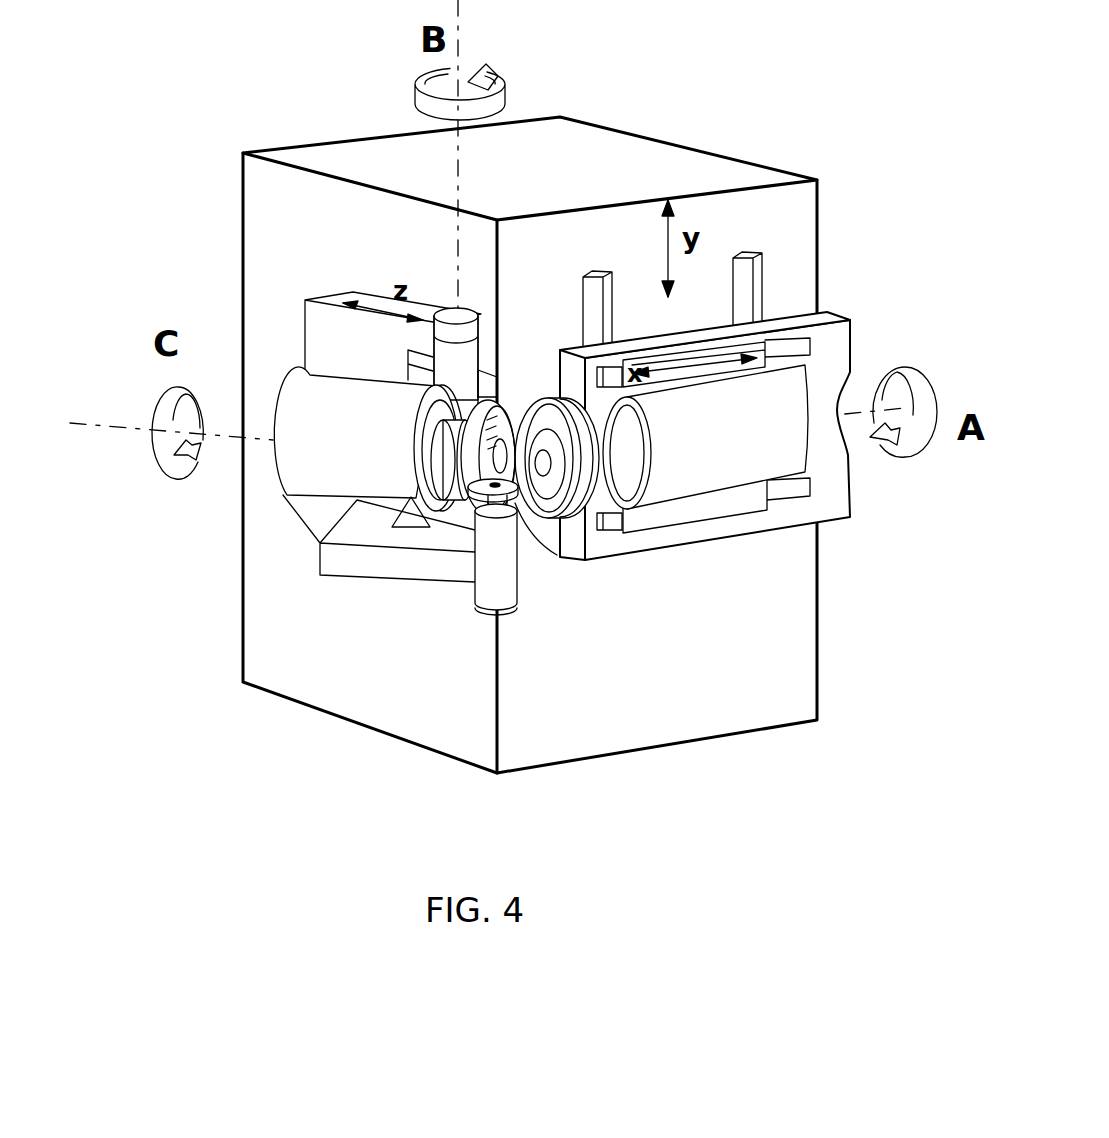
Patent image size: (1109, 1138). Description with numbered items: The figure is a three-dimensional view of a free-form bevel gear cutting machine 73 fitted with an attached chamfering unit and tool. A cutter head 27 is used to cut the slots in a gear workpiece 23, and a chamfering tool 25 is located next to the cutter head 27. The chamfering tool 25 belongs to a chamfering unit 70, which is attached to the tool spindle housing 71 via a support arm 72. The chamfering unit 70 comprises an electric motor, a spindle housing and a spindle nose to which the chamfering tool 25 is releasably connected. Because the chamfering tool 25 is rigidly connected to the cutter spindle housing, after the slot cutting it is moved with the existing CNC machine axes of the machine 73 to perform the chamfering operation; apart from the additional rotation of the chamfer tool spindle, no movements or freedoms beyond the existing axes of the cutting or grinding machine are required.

The gear workpiece 23 is at (547, 503).
The chamfering tool 25 is at (513, 507).
The cutter head 27 is at (483, 403).
The chamfering unit 70 is at (487, 588).
The tool spindle housing 71 is at (307, 462).
The support arm 72 is at (363, 565).
The free-form bevel gear cutting machine 73 is at (660, 163).